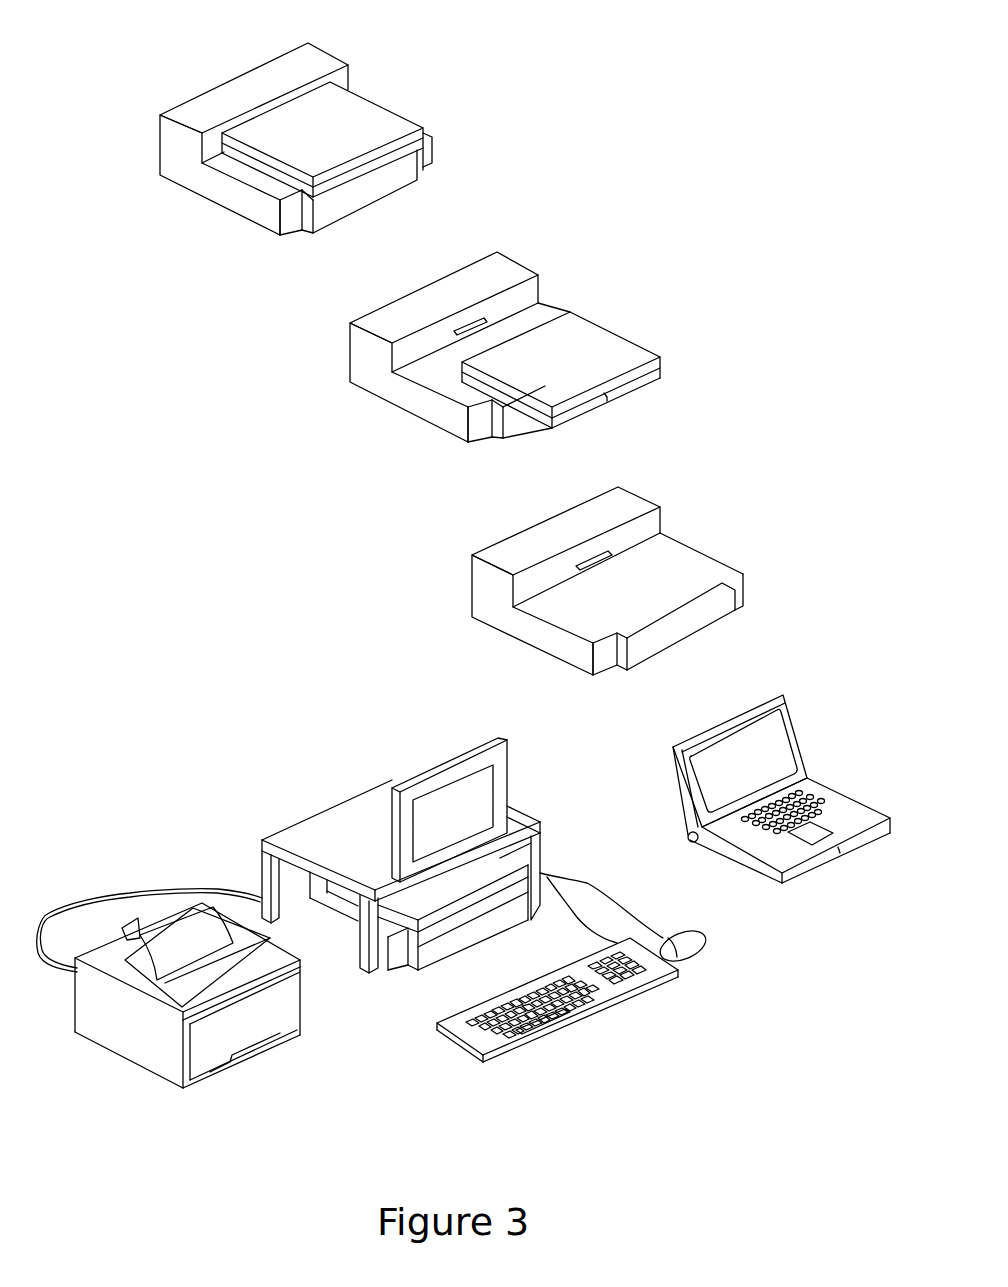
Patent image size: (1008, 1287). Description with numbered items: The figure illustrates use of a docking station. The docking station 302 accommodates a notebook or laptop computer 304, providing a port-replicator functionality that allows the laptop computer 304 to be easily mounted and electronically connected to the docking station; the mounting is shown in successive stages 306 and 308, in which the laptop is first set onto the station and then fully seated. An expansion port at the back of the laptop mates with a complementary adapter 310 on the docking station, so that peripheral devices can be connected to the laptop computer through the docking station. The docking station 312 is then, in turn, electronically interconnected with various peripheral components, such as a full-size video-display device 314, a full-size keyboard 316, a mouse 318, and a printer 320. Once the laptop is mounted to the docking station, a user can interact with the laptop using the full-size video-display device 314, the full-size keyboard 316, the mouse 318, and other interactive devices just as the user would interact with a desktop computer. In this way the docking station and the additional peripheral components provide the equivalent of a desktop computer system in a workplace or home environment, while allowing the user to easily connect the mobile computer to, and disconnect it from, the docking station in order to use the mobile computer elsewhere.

The docking station 302 is at (642, 551).
The laptop computer 304 is at (818, 765).
The mounting of laptop computer 306 is at (610, 308).
The mounting of laptop computer 308 is at (397, 77).
The complementary adapter 310 is at (603, 555).
The docking station 312 is at (402, 958).
The full-size video-display device 314 is at (515, 770).
The full-size keyboard 316 is at (600, 1028).
The mouse 318 is at (707, 957).
The printer 320 is at (108, 1057).